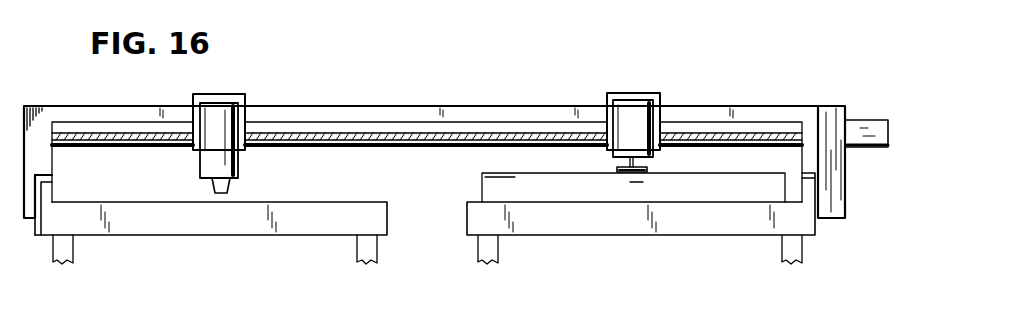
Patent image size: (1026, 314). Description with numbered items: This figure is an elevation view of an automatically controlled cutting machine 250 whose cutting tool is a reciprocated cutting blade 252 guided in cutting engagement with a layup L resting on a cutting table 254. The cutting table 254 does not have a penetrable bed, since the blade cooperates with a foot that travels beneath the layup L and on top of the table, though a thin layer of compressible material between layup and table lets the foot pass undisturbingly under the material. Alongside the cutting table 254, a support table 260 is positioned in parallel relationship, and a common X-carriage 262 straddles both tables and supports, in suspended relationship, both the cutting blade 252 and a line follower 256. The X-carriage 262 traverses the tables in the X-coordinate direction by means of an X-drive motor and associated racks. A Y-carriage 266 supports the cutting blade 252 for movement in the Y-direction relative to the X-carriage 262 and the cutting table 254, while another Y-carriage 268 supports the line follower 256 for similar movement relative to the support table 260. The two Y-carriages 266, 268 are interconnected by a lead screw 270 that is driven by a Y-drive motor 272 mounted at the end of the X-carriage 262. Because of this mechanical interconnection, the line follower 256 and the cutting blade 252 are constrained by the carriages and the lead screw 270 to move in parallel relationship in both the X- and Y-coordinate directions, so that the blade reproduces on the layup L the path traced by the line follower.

The cutting machine 250 is at (502, 100).
The cutting blade 252 is at (650, 167).
The cutting table 254 is at (610, 238).
The line follower 256 is at (200, 164).
The support table 260 is at (215, 237).
The X-carriage 262 is at (405, 107).
The Y-carriage 266 is at (640, 93).
The Y-carriage 268 is at (227, 94).
The lead screw 270 is at (382, 148).
The Y-drive motor 272 is at (851, 148).
The layup L is at (550, 172).